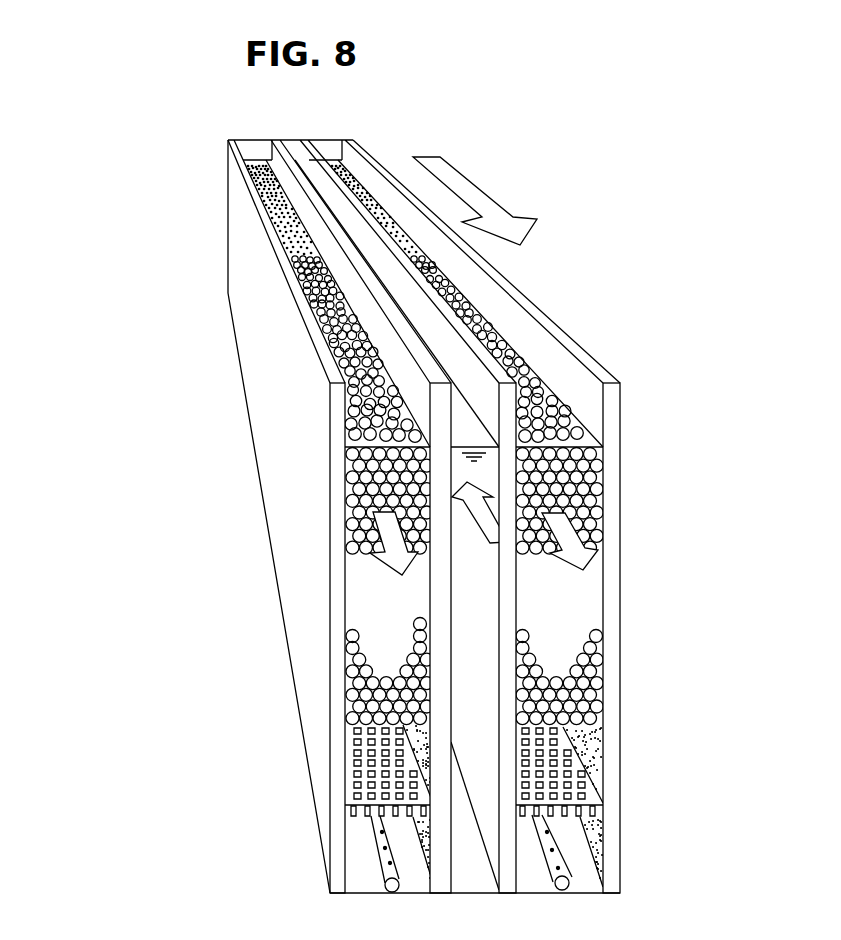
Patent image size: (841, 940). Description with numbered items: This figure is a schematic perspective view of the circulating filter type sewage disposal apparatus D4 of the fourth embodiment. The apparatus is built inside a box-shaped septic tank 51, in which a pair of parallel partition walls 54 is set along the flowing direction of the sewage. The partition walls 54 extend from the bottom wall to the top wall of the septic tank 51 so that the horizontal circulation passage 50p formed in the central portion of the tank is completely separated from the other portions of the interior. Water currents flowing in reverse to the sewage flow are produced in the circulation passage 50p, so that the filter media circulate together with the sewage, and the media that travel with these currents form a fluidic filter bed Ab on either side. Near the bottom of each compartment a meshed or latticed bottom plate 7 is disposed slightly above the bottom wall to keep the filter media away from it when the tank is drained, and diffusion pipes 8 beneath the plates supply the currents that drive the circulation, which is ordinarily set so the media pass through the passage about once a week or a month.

The septic tank 51 is at (375, 163).
The partition walls 54 is at (410, 337).
The circulating filter type sewage disposal apparatus D4 is at (214, 325).
The horizontal circulation passage 50p is at (483, 610).
The fluidic filter bed Ab is at (373, 595).
The meshed or latticed bottom plate 7 is at (346, 773).
The diffusion pipes 8 is at (358, 851).